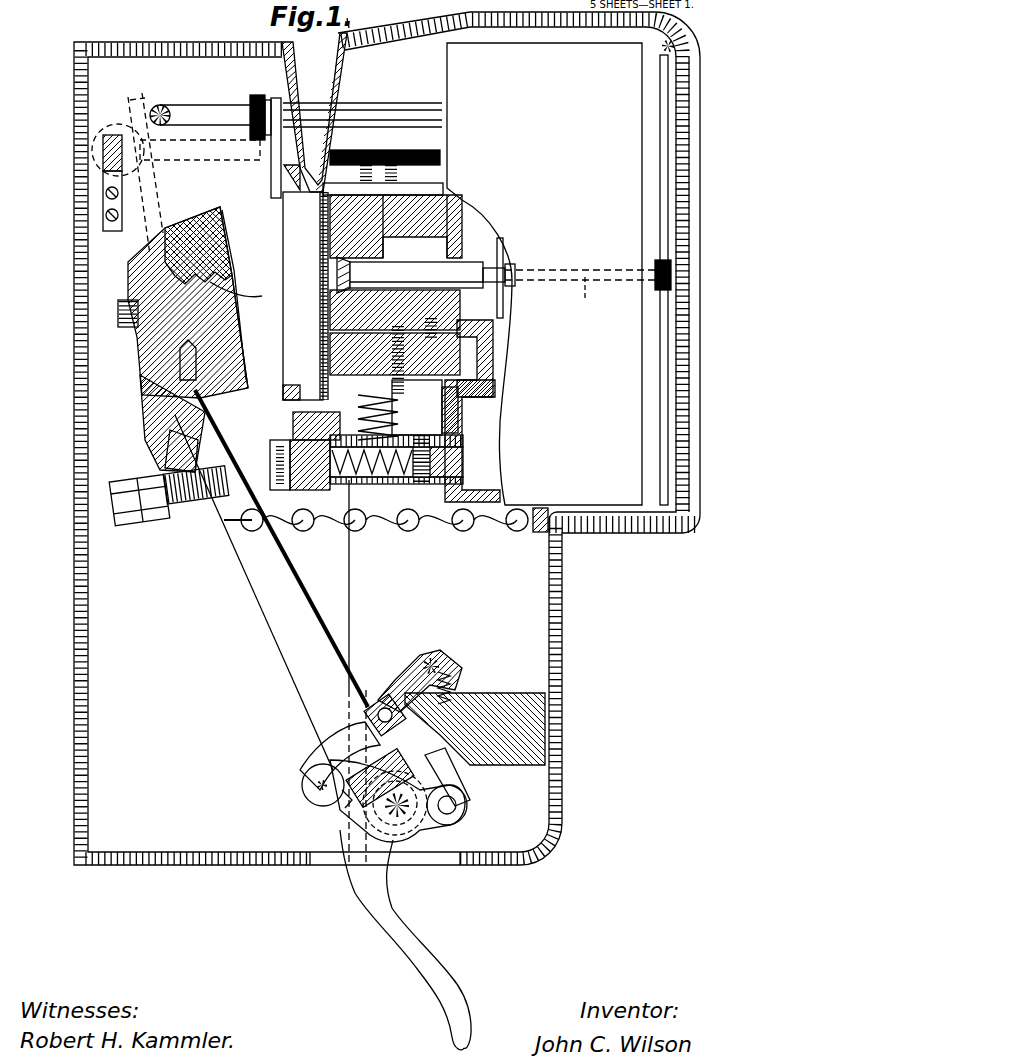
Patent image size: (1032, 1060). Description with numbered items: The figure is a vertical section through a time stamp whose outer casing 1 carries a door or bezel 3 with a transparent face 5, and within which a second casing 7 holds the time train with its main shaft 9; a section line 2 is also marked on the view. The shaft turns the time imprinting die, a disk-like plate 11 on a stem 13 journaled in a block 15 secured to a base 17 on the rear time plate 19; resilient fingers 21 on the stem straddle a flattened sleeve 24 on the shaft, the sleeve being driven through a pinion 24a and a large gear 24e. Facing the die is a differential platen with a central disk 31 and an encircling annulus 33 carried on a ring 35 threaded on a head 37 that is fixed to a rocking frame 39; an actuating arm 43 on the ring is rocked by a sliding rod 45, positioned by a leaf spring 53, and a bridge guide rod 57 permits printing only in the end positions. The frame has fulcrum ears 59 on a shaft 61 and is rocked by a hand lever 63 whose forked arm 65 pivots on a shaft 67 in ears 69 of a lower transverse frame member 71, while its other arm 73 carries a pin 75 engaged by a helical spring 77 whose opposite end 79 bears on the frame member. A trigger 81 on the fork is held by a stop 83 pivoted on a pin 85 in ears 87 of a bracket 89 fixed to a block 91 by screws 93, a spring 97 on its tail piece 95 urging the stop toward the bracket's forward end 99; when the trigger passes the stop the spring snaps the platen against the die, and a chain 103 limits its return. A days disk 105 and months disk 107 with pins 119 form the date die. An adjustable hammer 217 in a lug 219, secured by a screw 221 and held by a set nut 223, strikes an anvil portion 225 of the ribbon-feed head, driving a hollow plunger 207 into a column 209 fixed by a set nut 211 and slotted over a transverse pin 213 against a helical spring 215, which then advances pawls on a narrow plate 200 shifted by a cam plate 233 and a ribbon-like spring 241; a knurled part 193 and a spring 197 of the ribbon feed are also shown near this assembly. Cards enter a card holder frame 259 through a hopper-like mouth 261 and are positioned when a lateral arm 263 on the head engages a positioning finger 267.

The casing 1 is at (434, 30).
The section line 2 is at (305, 259).
The door or bezel 3 is at (692, 46).
The face 5 is at (690, 118).
The second casing 7 is at (458, 73).
The main shaft 9 is at (585, 301).
The disk-like plate 11 is at (322, 235).
The stem 13 is at (420, 266).
The block 15 is at (355, 205).
The base 17 is at (418, 205).
The rear clock or time plate 19 is at (460, 215).
The resilient fingers 21 is at (506, 262).
The flattened sleeve 24 is at (545, 268).
The pinion 24a is at (531, 278).
The large gear 24e is at (510, 295).
The central disk 31 is at (222, 262).
The annulus 33 is at (226, 214).
The ring 35 is at (184, 224).
The head 37 is at (126, 264).
The rocking frame 39 is at (256, 584).
The actuating arm 43 is at (151, 100).
The sliding rod 45 is at (113, 133).
The leaf spring 53 is at (103, 205).
The bridge guide rod 57 is at (210, 110).
The fulcrum ears 59 is at (397, 758).
The shaft 61 is at (430, 826).
The hand lever 63 is at (455, 970).
The arm 65 is at (305, 795).
The shaft 67 is at (316, 780).
The ears 69 is at (385, 806).
The lower transverse frame member 71 is at (335, 800).
The arm 73 is at (467, 805).
The pin 75 is at (456, 810).
The helical spring 77 is at (395, 812).
The opposite end of spring 79 is at (384, 773).
The trigger 81 is at (332, 728).
The stop 83 is at (398, 678).
The pin 85 is at (432, 666).
The ears 87 is at (468, 692).
The bracket 89 is at (500, 692).
The block 91 is at (548, 700).
The screws 93 is at (548, 744).
The tail piece 95 is at (448, 658).
The spring 97 is at (456, 672).
The forward end of bracket 99 is at (391, 716).
The chain 103 is at (422, 528).
The days disk 105 is at (345, 352).
The months disk 107 is at (345, 365).
The pins 119 is at (494, 350).
The knurled bar 193 is at (432, 156).
The spring 197 is at (365, 404).
The narrow plate 200 is at (292, 524).
The hollow plunger 207 is at (363, 478).
The hollow column 209 is at (464, 442).
The set nut 211 is at (425, 407).
The transverse pin 213 is at (464, 466).
The helical spring 215 is at (334, 472).
The adjustable hammer 217 is at (205, 502).
The lug 219 is at (170, 452).
The screw 221 is at (160, 425).
The set nut 223 is at (160, 520).
The anvil portion 225 is at (300, 438).
The cam plate 233 is at (355, 484).
The ribbon-like spring 241 is at (290, 398).
The card holder frame 259 is at (305, 218).
The hopper-like mouth 261 is at (341, 90).
The lateral arm 263 is at (118, 290).
The positioning finger 267 is at (244, 298).